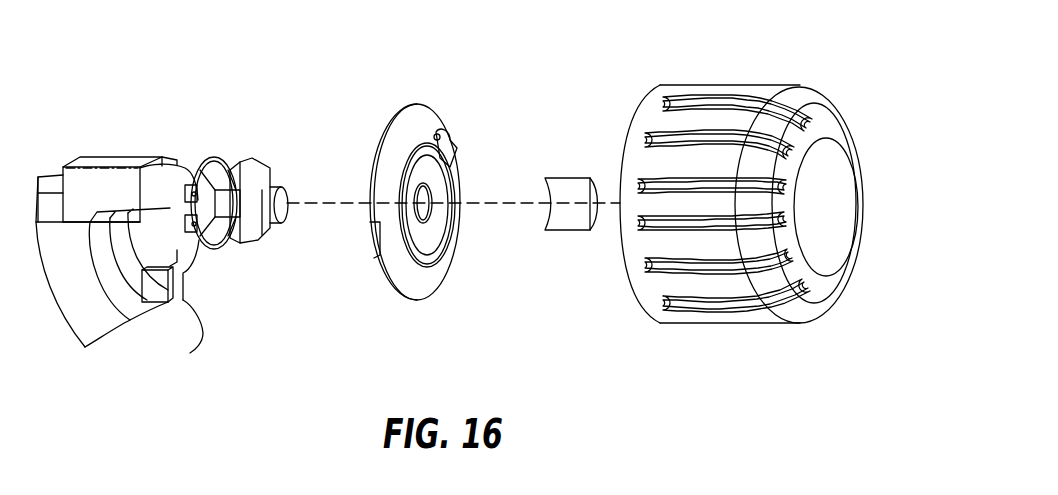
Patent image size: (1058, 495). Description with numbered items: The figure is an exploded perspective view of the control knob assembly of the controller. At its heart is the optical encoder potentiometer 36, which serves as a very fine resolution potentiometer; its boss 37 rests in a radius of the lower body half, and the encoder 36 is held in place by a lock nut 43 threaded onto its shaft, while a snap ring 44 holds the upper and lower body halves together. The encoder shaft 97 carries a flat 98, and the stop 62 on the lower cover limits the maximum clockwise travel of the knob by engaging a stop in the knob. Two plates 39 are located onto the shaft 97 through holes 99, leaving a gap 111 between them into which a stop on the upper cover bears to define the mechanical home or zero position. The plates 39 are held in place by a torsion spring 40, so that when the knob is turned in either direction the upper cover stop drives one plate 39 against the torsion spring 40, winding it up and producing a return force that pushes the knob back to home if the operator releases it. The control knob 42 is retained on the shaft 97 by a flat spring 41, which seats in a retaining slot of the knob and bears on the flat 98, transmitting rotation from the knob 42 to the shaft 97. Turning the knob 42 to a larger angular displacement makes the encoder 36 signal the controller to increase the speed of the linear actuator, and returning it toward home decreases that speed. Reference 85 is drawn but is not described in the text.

The optical encoder potentiometer 36 is at (120, 164).
The boss 37 is at (173, 167).
The snap ring 44 is at (230, 164).
The lock nut 43 is at (277, 168).
The encoder shaft 97 is at (288, 167).
The flat 98 is at (257, 240).
The stop 62 is at (190, 292).
The plates 39 is at (425, 115).
The torsion spring 40 is at (448, 233).
The holes 99 is at (430, 200).
The gap 111 is at (455, 165).
The slot 85 is at (433, 133).
The flat spring 41 is at (567, 235).
The control knob 42 is at (817, 243).